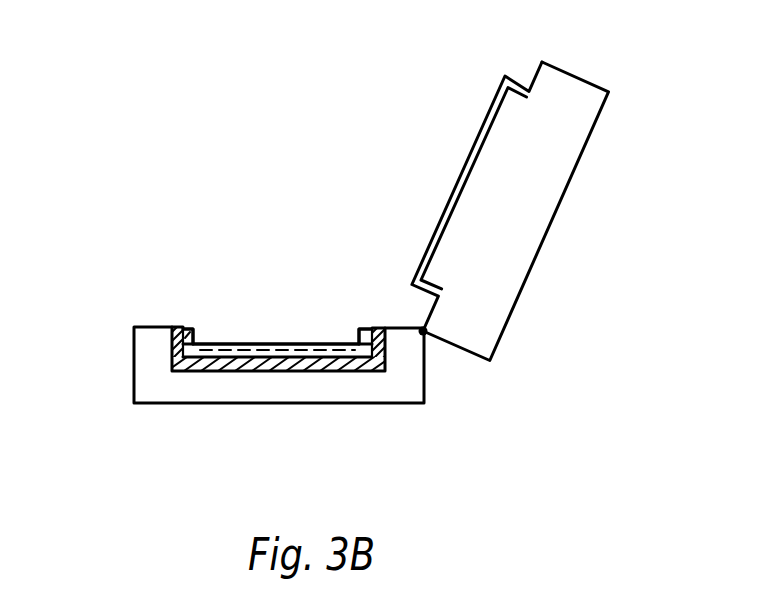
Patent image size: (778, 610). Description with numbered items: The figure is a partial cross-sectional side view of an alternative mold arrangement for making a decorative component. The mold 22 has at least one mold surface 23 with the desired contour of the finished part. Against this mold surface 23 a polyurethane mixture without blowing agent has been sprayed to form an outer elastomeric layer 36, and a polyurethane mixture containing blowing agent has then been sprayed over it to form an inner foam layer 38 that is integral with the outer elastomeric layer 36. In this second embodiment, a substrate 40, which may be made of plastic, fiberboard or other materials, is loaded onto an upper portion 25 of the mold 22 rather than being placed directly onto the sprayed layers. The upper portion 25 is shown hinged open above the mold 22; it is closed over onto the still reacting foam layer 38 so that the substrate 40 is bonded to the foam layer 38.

The mold 22 is at (425, 390).
The mold surface 23 is at (202, 371).
The upper portion 25 is at (527, 277).
The outer elastomeric layer 36 is at (277, 371).
The inner foam layer 38 is at (202, 348).
The substrate 40 is at (484, 122).